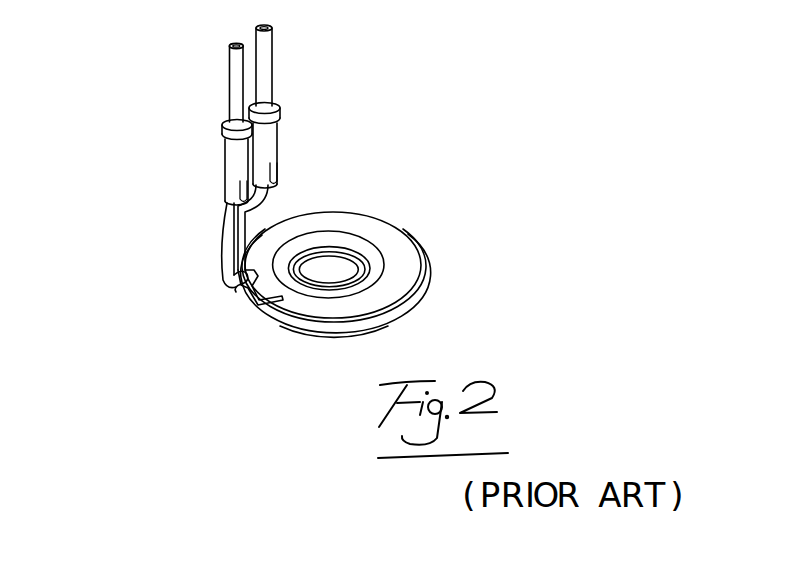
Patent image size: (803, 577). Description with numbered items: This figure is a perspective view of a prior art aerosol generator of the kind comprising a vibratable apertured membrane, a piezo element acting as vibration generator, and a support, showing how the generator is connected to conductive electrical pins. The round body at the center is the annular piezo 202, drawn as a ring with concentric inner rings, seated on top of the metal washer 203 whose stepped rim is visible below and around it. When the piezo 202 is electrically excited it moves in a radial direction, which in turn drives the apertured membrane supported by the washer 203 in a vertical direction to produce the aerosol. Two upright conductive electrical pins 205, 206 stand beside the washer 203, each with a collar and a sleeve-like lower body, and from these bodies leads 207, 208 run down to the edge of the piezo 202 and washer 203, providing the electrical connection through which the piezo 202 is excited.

The annular piezo 202 is at (390, 238).
The metal washer 203 is at (418, 303).
The first terminal pin 205 is at (273, 162).
The second terminal pin 206 is at (242, 200).
The lead wire 207 is at (281, 297).
The lead wire loop 208 is at (260, 318).